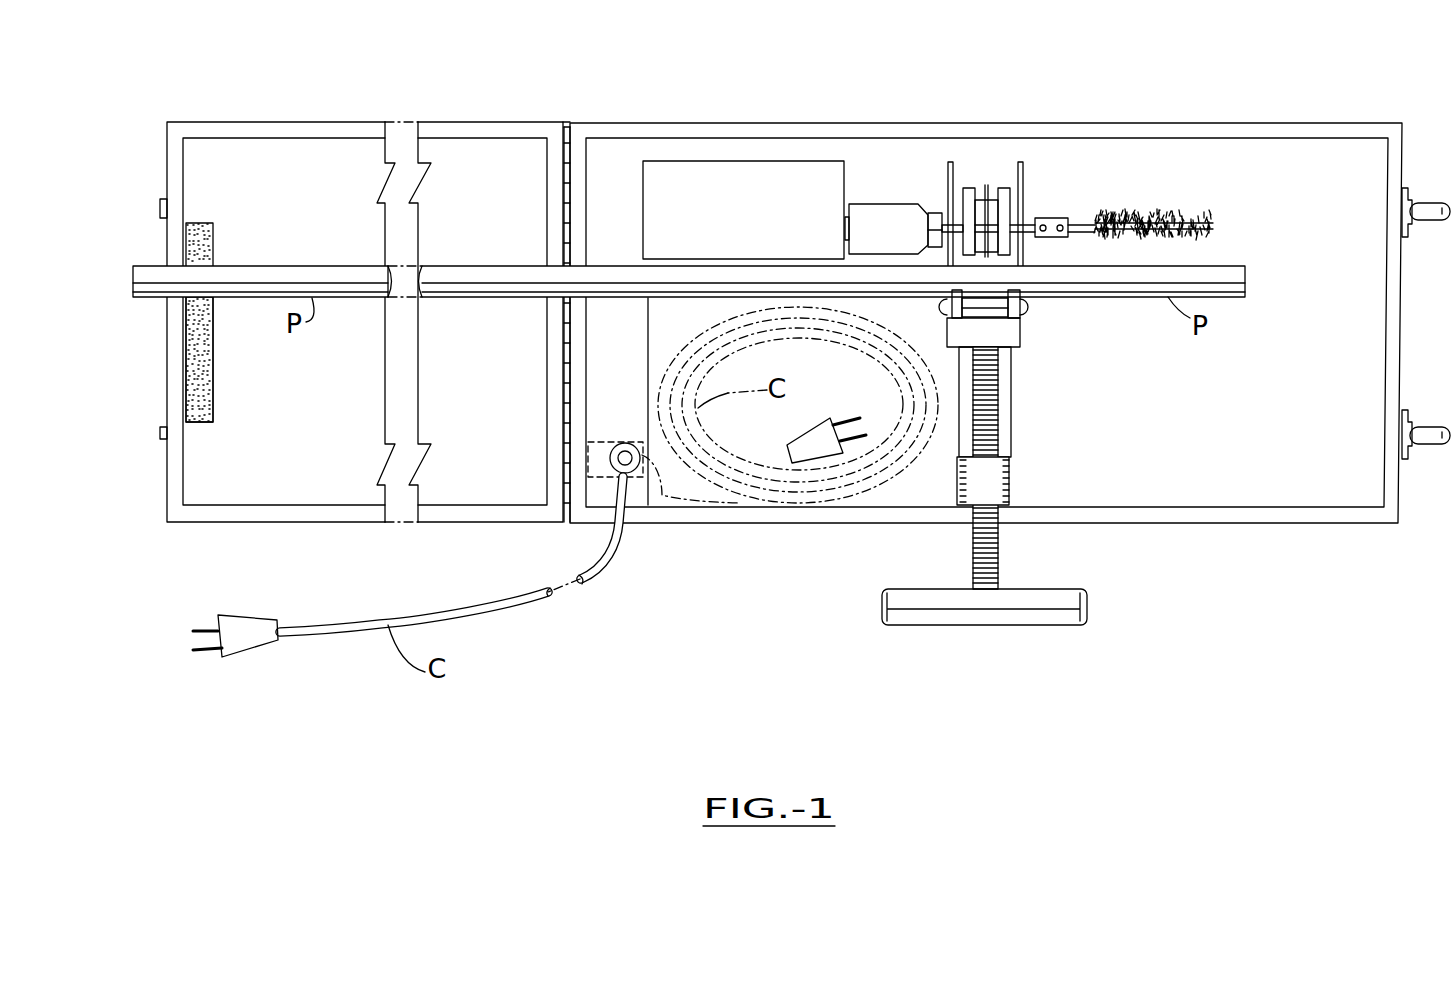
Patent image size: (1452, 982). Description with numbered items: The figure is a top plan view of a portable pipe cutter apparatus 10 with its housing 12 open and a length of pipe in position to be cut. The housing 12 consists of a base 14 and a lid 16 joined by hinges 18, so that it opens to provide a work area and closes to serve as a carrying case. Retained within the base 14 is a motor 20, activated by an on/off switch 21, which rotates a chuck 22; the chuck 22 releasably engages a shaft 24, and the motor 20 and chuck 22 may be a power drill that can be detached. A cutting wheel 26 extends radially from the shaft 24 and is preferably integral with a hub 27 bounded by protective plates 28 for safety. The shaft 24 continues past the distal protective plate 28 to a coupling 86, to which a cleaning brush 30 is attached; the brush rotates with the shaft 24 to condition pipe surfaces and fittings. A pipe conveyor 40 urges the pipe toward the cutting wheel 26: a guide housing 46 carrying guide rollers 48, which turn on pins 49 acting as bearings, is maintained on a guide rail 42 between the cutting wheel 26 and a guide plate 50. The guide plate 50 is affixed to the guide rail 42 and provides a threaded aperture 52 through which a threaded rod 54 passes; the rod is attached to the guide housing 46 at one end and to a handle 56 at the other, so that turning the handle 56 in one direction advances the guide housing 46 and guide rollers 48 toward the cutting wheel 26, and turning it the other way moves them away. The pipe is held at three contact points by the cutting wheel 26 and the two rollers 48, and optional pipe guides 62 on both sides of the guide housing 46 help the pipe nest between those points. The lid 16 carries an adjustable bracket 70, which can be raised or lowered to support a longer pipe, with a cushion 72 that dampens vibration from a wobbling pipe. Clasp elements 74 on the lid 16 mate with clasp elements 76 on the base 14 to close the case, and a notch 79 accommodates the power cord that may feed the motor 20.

The pipe cutter apparatus 10 is at (986, 370).
The housing 12 is at (570, 116).
The base 14 is at (770, 117).
The lid 16 is at (293, 118).
The hinges 18 is at (566, 212).
The motor 20 is at (795, 178).
The on/off switch 21 is at (645, 490).
The chuck 22 is at (861, 210).
The shaft 24 is at (958, 225).
The cutting wheel 26 is at (984, 170).
The hub 27 is at (993, 240).
The protective plates 28 is at (964, 190).
The cleaning brush 30 is at (1161, 205).
The pipe conveyor 40 is at (1039, 487).
The guide rail 42 is at (1011, 390).
The guide housing 46 is at (1010, 336).
The guide rollers 48 is at (985, 310).
The pins 49 is at (1023, 308).
The guide plate 50 is at (1005, 468).
The threaded aperture 52 is at (998, 481).
The threaded rod 54 is at (995, 412).
The handle 56 is at (995, 615).
The pipe guides 62 is at (949, 162).
The adjustable bracket 70 is at (187, 383).
The cushion 72 is at (205, 242).
The clasp elements 74 is at (168, 208).
The mating clasp elements 76 is at (1413, 207).
The notch 79 is at (608, 514).
The coupling 86 is at (1055, 215).